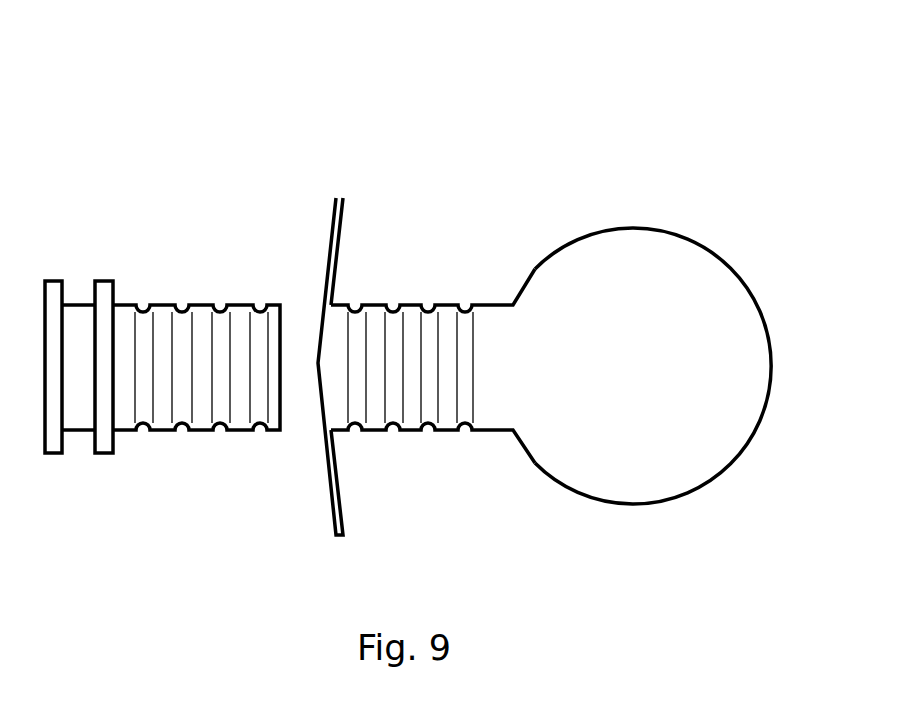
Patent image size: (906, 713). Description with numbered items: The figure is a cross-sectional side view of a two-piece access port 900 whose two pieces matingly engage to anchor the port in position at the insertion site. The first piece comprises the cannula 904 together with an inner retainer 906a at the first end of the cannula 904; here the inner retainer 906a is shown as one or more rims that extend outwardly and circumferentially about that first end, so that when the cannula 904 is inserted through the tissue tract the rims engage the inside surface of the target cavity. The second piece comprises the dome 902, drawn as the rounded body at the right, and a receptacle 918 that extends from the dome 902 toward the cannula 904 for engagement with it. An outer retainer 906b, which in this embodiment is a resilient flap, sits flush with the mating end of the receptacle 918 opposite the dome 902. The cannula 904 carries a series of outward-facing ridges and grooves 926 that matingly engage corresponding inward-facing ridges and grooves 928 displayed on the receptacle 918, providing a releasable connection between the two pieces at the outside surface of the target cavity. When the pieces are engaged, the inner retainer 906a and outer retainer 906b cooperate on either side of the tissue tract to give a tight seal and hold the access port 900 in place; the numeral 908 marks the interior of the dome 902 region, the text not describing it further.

The access port 900 is at (253, 180).
The dome 902 is at (557, 247).
The cannula 904 is at (240, 305).
The inner retainer 906a is at (123, 467).
The outer retainer 906b is at (335, 198).
The ring opening 908 is at (660, 310).
The receptacle 918 is at (343, 305).
The outward-facing ridges and grooves 926 is at (283, 440).
The inward-facing ridges and grooves 928 is at (477, 445).